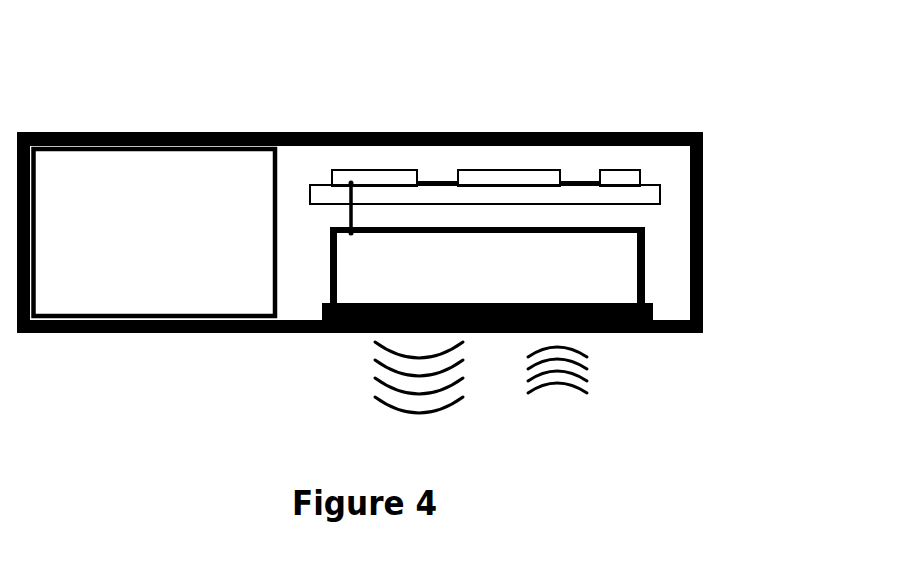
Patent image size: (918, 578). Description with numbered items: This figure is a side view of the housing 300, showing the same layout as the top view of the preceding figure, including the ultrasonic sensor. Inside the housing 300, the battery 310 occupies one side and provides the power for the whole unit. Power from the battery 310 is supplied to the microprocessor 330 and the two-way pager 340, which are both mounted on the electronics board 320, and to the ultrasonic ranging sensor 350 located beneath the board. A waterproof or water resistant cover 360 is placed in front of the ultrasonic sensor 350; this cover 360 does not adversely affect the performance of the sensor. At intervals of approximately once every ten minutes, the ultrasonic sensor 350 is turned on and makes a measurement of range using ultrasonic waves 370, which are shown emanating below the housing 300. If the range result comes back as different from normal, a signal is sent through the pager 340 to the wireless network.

The housing 300 is at (360, 217).
The battery 310 is at (155, 232).
The electronics board 320 is at (668, 195).
The microprocessor 330 is at (345, 150).
The two-way pager 340 is at (538, 161).
The ultrasonic ranging sensor 350 is at (370, 226).
The waterproof or water resistant cover 360 is at (645, 345).
The ultrasonic waves 370 is at (481, 389).